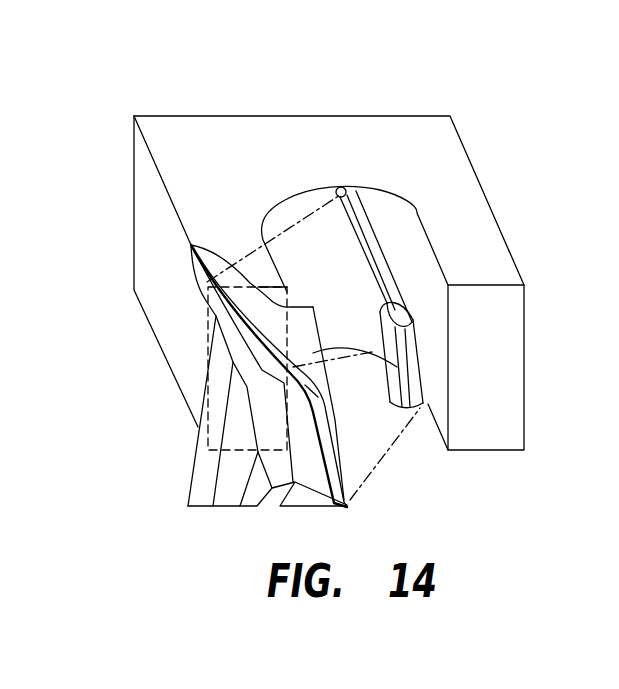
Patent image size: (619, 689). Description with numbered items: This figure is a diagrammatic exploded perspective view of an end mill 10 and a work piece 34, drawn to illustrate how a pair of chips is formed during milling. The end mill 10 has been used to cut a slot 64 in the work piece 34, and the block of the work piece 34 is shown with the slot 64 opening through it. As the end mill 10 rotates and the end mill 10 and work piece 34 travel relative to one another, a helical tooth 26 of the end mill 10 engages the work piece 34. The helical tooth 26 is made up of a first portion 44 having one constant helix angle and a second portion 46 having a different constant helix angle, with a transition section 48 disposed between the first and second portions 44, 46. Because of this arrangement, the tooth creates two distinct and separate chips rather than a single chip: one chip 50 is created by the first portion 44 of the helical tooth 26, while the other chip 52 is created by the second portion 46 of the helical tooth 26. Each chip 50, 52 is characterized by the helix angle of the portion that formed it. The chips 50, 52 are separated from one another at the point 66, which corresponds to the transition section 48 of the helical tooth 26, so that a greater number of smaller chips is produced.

The end mill 10 is at (191, 485).
The helical tooth 26 is at (324, 398).
The work piece 34 is at (452, 115).
The first portion 44 is at (321, 400).
The second portion 46 is at (268, 343).
The transition section 48 is at (323, 398).
The chip 50 is at (401, 412).
The second chip 52 is at (367, 207).
The slot 64 is at (303, 187).
The point 66 is at (413, 313).